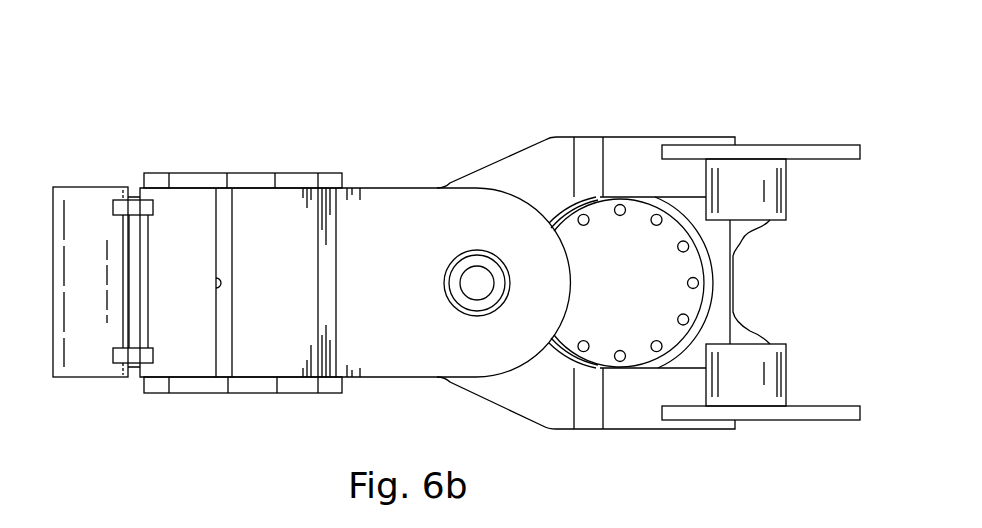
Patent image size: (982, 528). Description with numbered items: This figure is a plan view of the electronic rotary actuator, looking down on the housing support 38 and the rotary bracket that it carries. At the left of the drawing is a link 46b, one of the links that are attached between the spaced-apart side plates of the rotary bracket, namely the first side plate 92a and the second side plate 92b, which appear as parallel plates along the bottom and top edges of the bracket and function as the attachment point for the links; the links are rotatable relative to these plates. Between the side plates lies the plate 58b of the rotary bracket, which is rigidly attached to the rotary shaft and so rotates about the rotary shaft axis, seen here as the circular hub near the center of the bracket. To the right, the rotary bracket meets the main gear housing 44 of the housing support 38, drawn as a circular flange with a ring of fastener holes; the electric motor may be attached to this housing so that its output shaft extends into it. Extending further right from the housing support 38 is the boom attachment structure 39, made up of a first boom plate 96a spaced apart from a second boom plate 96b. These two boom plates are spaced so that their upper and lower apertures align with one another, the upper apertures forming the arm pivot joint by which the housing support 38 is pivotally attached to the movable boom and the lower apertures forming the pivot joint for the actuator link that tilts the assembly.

The housing support 38 is at (592, 448).
The boom attachment structure 39 is at (648, 275).
The main gear housing 44 is at (567, 222).
The link 46b is at (90, 187).
The rotary bracket lower plate 58b is at (388, 187).
The first side plate 92a is at (248, 393).
The second side plate 92b is at (248, 173).
The first boom plate 96a is at (818, 420).
The second boom plate 96b is at (818, 147).